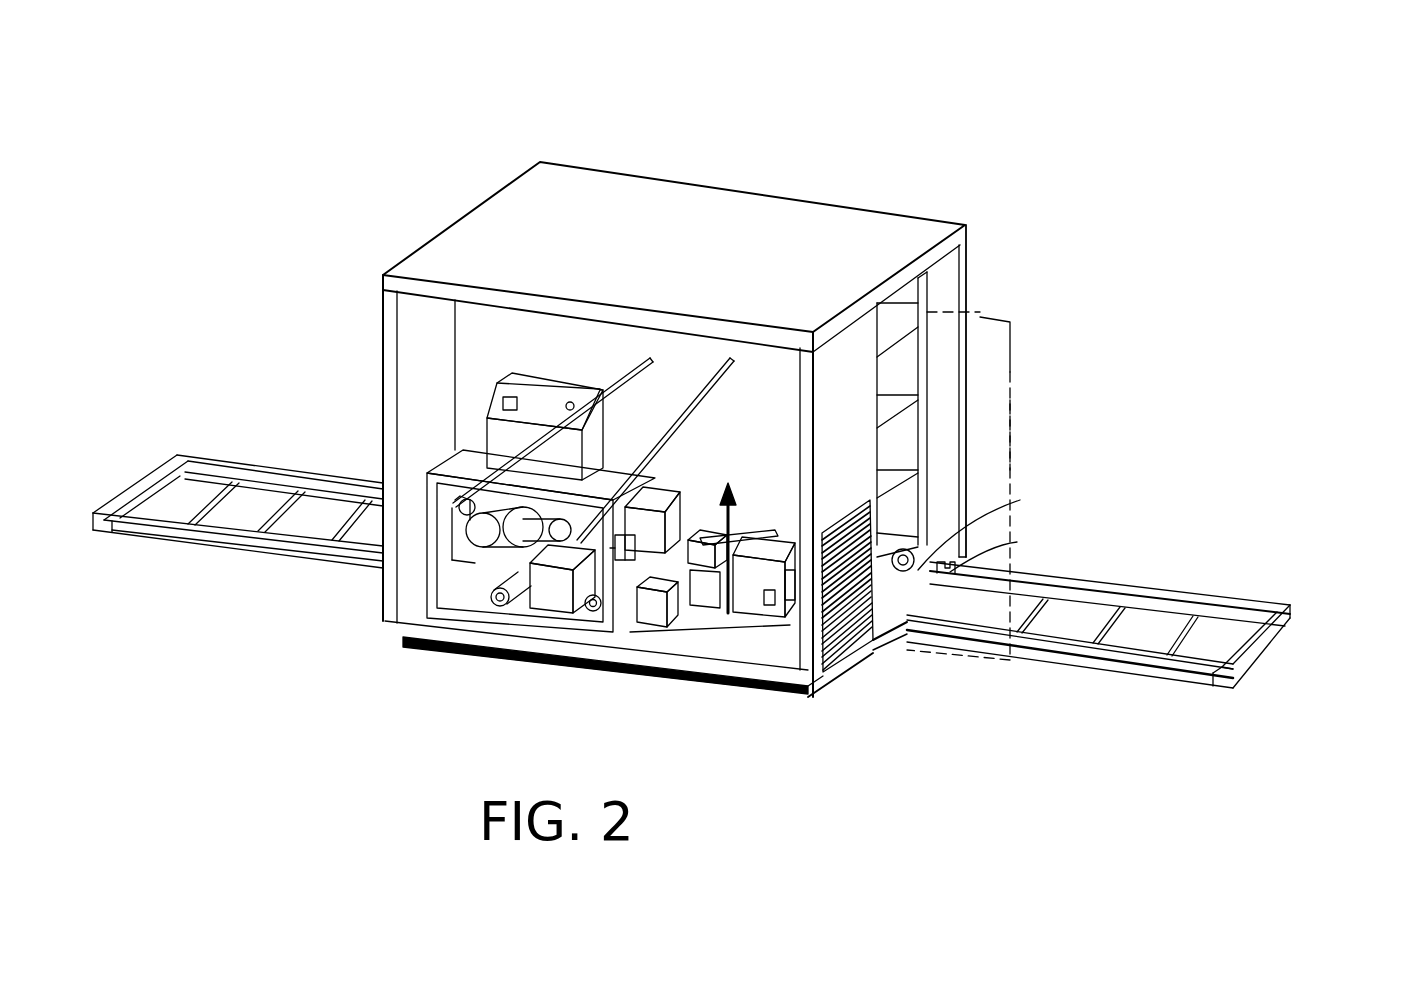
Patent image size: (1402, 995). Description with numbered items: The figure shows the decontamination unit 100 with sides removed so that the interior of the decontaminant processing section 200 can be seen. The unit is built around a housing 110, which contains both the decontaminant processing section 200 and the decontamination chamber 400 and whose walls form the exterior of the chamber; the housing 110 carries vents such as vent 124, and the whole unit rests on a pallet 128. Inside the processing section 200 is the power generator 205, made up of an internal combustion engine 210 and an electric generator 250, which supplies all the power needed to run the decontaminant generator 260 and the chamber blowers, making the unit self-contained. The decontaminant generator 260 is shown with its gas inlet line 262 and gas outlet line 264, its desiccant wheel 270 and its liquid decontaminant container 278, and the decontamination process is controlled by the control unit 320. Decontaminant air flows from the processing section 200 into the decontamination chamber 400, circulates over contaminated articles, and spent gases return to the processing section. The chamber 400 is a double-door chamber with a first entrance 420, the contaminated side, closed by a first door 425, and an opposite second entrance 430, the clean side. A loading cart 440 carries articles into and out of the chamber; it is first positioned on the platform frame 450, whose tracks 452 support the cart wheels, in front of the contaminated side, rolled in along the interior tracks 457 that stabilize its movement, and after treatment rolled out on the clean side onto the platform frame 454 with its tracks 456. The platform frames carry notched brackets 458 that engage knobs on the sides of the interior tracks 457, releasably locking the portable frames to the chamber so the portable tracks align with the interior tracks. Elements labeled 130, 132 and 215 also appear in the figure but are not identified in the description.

The decontamination unit 100 is at (778, 95).
The housing 110 is at (825, 197).
The vent 124 is at (838, 520).
The pallet 128 is at (573, 662).
The front corner post 130 is at (801, 412).
The rear frame member 132 is at (968, 272).
The decontaminant processing section 200 is at (745, 595).
The power generator 205 is at (702, 582).
The internal combustion engine 210 is at (750, 605).
The generator end cap 215 is at (790, 590).
The electric generator 250 is at (710, 580).
The decontaminant generator 260 is at (493, 538).
The gas inlet line 262 is at (632, 382).
The gas outlet line 264 is at (672, 438).
The desiccant wheel 270 is at (548, 595).
The liquid decontaminant container 278 is at (652, 492).
The control unit 320 is at (568, 352).
The decontamination chamber 400 is at (940, 437).
The first entrance 420 is at (943, 398).
The first door 425 is at (1060, 435).
The second entrance 430 is at (477, 203).
The loading cart 440 is at (924, 362).
The platform frame 450 is at (1270, 636).
The tracks 452 is at (1100, 585).
The platform frame 454 is at (133, 487).
The tracks 456 is at (270, 478).
The interior tracks 457 is at (1020, 500).
The notched brackets 458 is at (1017, 542).